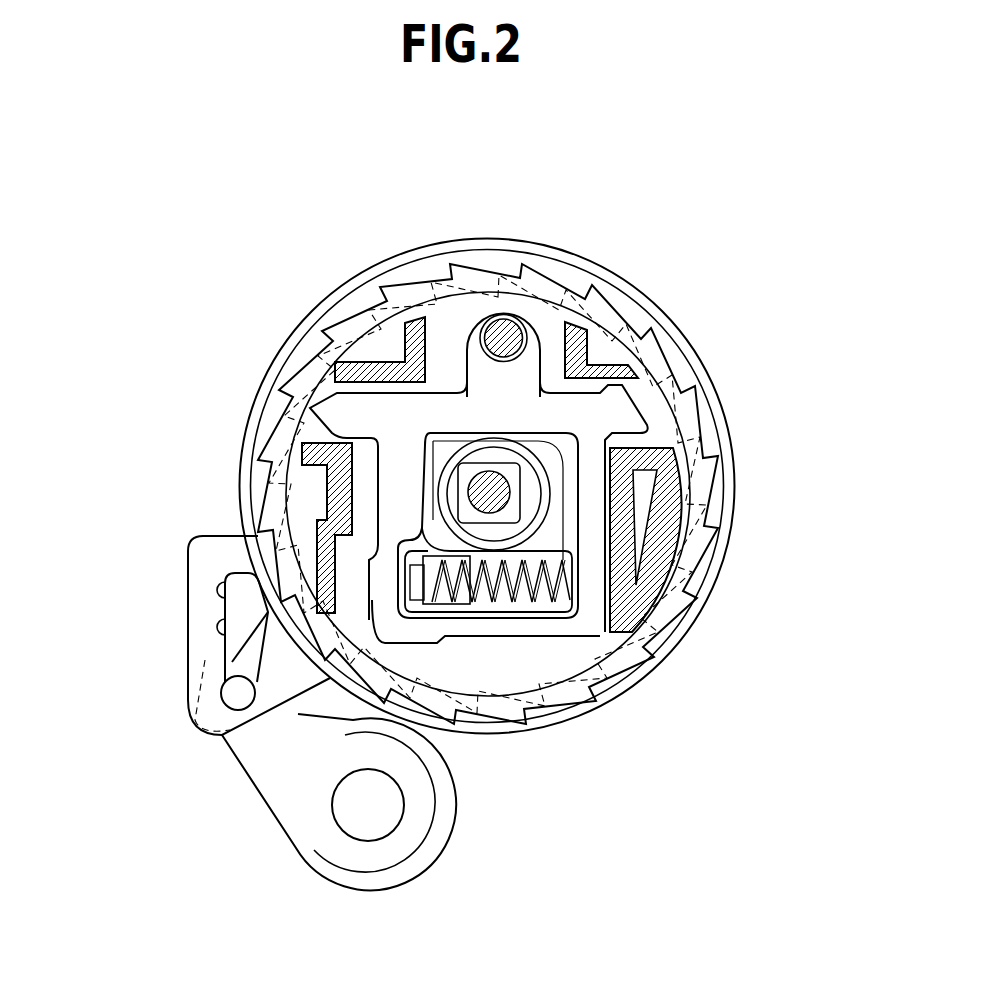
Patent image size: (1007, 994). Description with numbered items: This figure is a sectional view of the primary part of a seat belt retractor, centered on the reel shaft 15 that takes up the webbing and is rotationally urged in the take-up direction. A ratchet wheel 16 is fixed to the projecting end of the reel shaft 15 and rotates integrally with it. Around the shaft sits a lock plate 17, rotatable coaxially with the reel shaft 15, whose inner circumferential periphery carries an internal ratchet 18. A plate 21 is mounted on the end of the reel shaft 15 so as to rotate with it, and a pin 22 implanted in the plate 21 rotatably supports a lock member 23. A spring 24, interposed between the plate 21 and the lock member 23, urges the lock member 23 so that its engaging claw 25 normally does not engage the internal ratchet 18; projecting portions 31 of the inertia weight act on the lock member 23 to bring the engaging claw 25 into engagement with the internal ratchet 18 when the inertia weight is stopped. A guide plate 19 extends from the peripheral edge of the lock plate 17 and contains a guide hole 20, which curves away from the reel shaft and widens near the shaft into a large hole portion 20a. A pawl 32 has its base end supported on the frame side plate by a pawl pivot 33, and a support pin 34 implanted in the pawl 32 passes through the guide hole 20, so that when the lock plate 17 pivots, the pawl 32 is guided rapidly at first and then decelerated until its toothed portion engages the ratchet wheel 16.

The reel shaft 15 is at (492, 492).
The ratchet wheel 16 is at (497, 692).
The lock plate 17 is at (668, 632).
The internal ratchet 18 is at (290, 425).
The guide plate 19 is at (215, 548).
The guide hole 20 is at (222, 636).
The large hole portion 20a is at (223, 598).
The plate 21 is at (622, 548).
The pin 22 is at (501, 318).
The lock member 23 is at (535, 355).
The spring 24 is at (535, 605).
The engaging claw 25 is at (310, 408).
The projecting portions 31 is at (405, 318).
The pawl 32 is at (262, 745).
The pawl pivot 33 is at (357, 818).
The support pin 34 is at (235, 702).